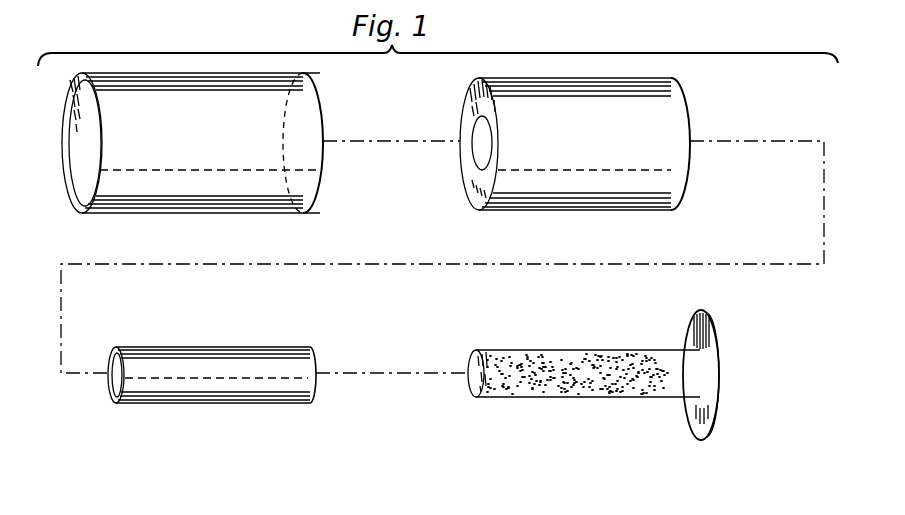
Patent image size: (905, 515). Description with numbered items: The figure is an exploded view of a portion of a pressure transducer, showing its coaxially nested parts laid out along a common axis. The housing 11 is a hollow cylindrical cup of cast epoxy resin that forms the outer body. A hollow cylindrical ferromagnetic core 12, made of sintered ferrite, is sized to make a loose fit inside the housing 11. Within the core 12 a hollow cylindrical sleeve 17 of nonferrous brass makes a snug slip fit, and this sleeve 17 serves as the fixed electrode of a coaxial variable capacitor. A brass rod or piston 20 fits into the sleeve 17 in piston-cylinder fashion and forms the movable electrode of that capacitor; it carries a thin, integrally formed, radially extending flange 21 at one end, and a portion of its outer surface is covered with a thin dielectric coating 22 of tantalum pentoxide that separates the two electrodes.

The housing 11 is at (300, 77).
The ferromagnetic core 12 is at (673, 96).
The sleeve 17 is at (283, 346).
The piston 20 is at (672, 360).
The flange 21 is at (718, 328).
The dielectric coating 22 is at (570, 337).